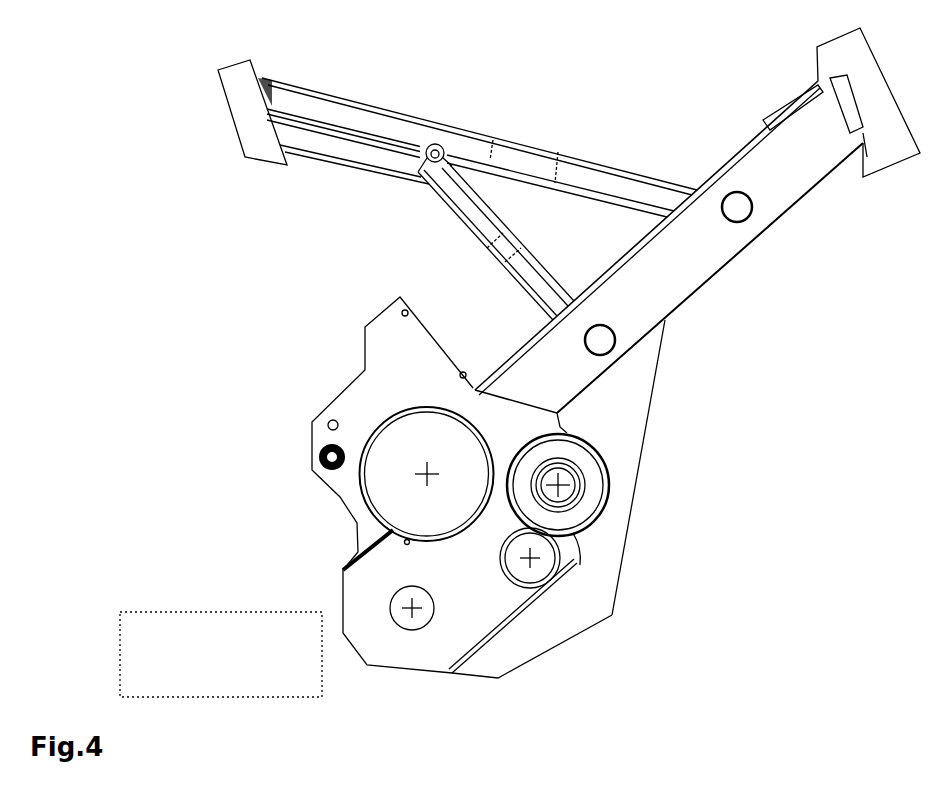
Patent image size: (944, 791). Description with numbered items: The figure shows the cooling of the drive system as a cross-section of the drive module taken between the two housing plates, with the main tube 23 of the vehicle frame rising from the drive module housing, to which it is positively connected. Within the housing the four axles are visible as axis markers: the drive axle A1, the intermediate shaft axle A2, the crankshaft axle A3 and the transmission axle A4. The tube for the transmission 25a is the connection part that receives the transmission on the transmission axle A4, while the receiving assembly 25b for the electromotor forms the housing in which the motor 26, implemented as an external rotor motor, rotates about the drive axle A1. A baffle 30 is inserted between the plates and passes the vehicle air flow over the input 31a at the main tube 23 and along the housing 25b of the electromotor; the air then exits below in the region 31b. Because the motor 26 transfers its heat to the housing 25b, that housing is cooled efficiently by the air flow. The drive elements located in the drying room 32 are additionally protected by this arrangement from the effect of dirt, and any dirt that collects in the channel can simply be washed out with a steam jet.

The main tube 23 is at (697, 272).
The tube for the transmission 25a is at (362, 502).
The receiving assembly for the electromotor 25b is at (607, 462).
The motor 26 is at (577, 513).
The baffle 30 is at (578, 563).
The input 31a is at (648, 372).
The region 31b is at (455, 693).
The drying room 32 is at (383, 565).
The drive axle A1 is at (560, 485).
The intermediate shaft axle A2 is at (530, 558).
The crankshaft axle A3 is at (412, 608).
The transmission axle A4 is at (427, 474).